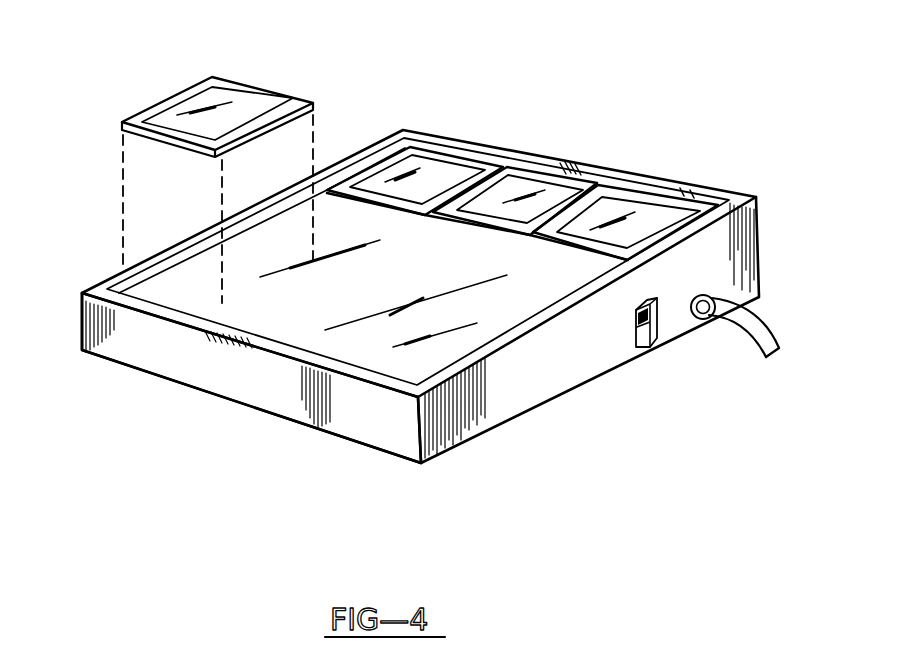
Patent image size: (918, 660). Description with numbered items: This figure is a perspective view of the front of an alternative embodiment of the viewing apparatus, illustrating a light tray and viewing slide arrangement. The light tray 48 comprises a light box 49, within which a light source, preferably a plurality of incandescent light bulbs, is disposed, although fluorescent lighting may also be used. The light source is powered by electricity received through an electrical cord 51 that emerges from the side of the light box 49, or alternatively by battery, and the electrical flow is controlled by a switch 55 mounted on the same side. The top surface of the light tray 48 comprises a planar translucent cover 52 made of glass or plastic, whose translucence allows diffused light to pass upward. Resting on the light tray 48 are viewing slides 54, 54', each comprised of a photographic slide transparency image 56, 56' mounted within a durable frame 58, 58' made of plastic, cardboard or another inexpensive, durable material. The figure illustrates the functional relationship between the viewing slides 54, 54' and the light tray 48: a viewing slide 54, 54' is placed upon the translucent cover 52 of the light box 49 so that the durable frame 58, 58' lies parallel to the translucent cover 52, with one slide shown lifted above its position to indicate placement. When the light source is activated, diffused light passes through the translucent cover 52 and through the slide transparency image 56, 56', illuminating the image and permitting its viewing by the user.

The light tray 48 is at (578, 409).
The light box 49 is at (168, 357).
The electrical cord 51 is at (757, 327).
The translucent cover 52 is at (372, 342).
The viewing slide 54 is at (262, 166).
The viewing slide 54' is at (684, 149).
The switch 55 is at (652, 340).
The slide transparency image 56 is at (448, 140).
The slide transparency image 56' is at (628, 173).
The durable frame 58 is at (415, 128).
The durable frame 58' is at (631, 167).